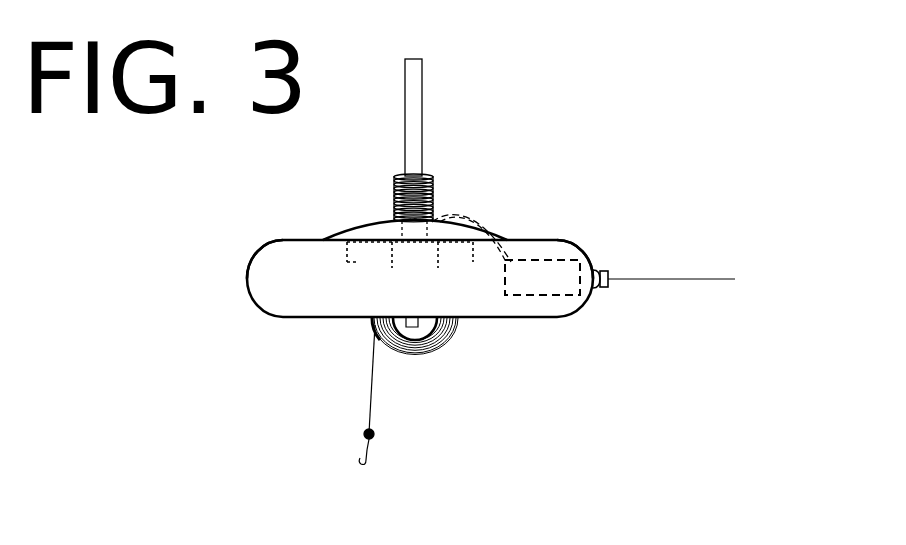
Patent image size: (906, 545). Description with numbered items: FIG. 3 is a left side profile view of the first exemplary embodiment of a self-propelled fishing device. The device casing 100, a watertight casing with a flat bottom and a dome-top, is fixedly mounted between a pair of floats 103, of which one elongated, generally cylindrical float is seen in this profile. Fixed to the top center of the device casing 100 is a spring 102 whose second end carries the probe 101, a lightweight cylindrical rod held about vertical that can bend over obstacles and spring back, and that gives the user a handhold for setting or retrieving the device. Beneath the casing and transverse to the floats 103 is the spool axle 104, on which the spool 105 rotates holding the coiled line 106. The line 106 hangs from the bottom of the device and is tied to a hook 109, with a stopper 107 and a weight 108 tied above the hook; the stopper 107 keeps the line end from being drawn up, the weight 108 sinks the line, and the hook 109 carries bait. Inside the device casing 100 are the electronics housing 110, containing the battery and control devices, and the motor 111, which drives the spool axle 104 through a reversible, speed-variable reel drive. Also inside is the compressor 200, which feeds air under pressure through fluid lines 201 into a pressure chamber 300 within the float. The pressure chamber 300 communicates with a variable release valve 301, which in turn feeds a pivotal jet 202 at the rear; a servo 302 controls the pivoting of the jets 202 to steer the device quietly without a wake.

The device casing 100 is at (350, 235).
The probe 101 is at (412, 83).
The spring 102 is at (395, 218).
The floats 103 is at (268, 258).
The spool axle 104 is at (423, 355).
The spool 105 is at (375, 322).
The line 106 is at (365, 380).
The stopper 107 is at (364, 434).
The weight 108 is at (372, 448).
The hook 109 is at (362, 459).
The electronics housing 110 is at (352, 262).
The motor 111 is at (425, 260).
The compressor 200 is at (410, 230).
The fluid lines 201 is at (485, 192).
The jets 202 is at (704, 280).
The pressure chamber 300 is at (535, 285).
The release valve 301 is at (585, 277).
The servo 302 is at (600, 288).